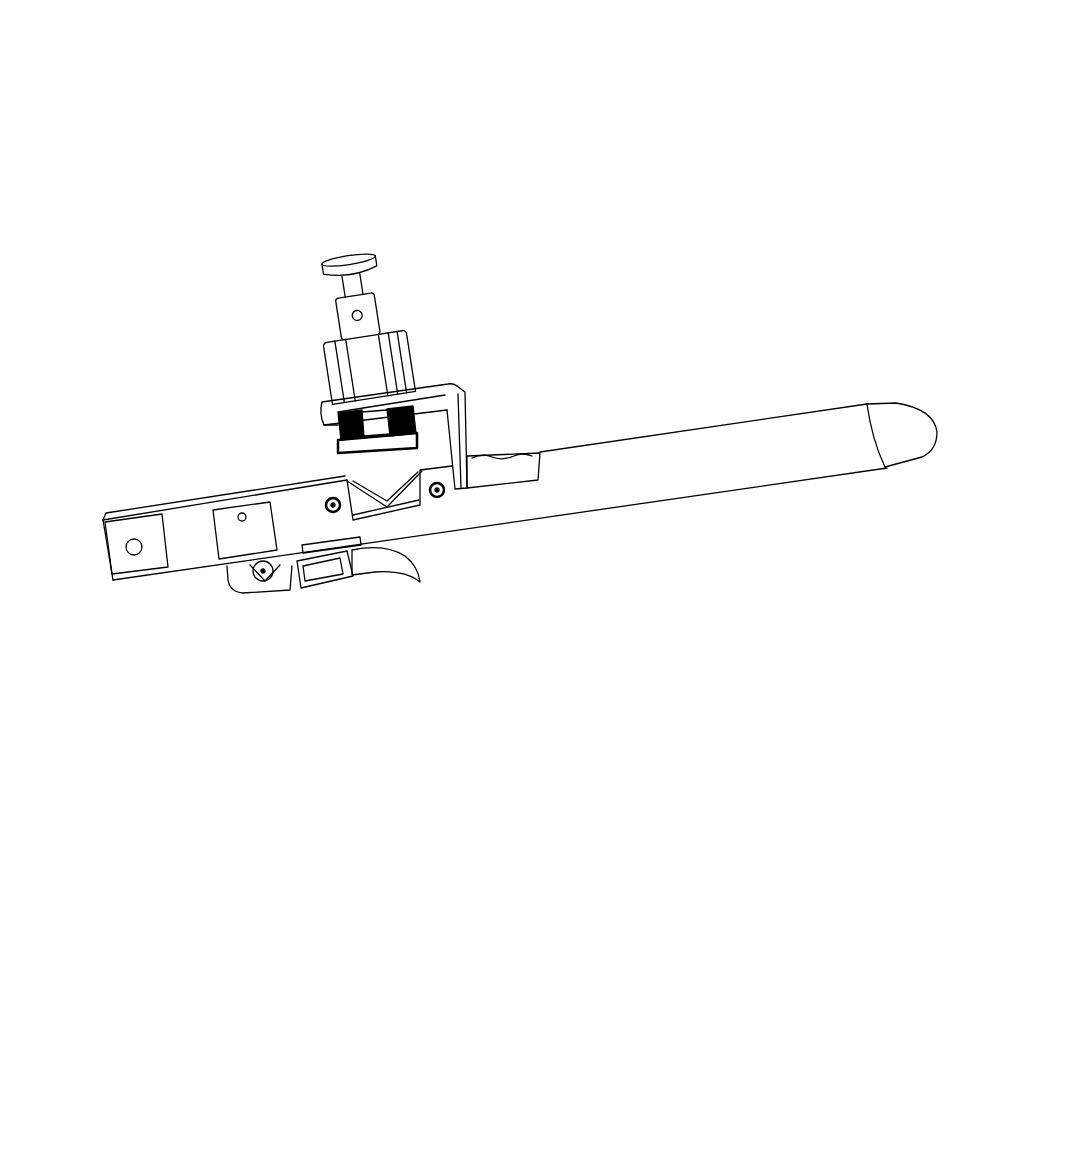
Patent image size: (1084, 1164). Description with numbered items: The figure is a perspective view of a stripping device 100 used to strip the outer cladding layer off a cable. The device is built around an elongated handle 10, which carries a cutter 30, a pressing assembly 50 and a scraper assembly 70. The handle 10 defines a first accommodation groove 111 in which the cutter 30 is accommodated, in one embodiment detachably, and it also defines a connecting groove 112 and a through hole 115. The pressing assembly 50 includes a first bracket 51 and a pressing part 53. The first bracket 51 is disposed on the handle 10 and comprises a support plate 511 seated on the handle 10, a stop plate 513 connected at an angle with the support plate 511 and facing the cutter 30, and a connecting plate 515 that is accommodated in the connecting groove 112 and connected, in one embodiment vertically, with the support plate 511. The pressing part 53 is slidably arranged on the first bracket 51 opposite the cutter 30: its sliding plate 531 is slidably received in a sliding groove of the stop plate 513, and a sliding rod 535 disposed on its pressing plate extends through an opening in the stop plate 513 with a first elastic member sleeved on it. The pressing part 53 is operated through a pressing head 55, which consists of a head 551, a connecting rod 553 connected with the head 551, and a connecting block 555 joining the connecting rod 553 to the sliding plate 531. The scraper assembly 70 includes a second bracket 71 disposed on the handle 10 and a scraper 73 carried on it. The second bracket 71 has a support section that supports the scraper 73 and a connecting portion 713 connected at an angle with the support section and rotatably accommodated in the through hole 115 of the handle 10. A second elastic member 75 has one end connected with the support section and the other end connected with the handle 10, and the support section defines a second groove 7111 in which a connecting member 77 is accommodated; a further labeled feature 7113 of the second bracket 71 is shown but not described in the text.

The stripping device 100 is at (541, 50).
The handle 10 is at (763, 467).
The first accommodation groove 111 is at (421, 506).
The connecting groove 112 is at (526, 483).
The through hole 115 is at (111, 512).
The cutter 30 is at (410, 499).
The pressing assembly 50 is at (473, 249).
The first bracket 51 is at (453, 432).
The support plate 511 is at (458, 451).
The stop plate 513 is at (411, 406).
The connecting plate 515 is at (541, 470).
The pressing part 53 is at (333, 369).
The sliding plate 531 is at (368, 357).
The sliding rod 535 is at (390, 380).
The pressing head 55 is at (331, 268).
The head 551 is at (356, 270).
The connecting rod 553 is at (355, 287).
The connecting block 555 is at (368, 313).
The scraper assembly 70 is at (295, 681).
The second bracket 71 is at (241, 574).
The second groove 7111 is at (283, 582).
The hook 7113 is at (398, 577).
The connecting portion 713 is at (250, 563).
The scraper 73 is at (356, 574).
The second elastic member 75 is at (252, 571).
The connecting member 77 is at (266, 580).